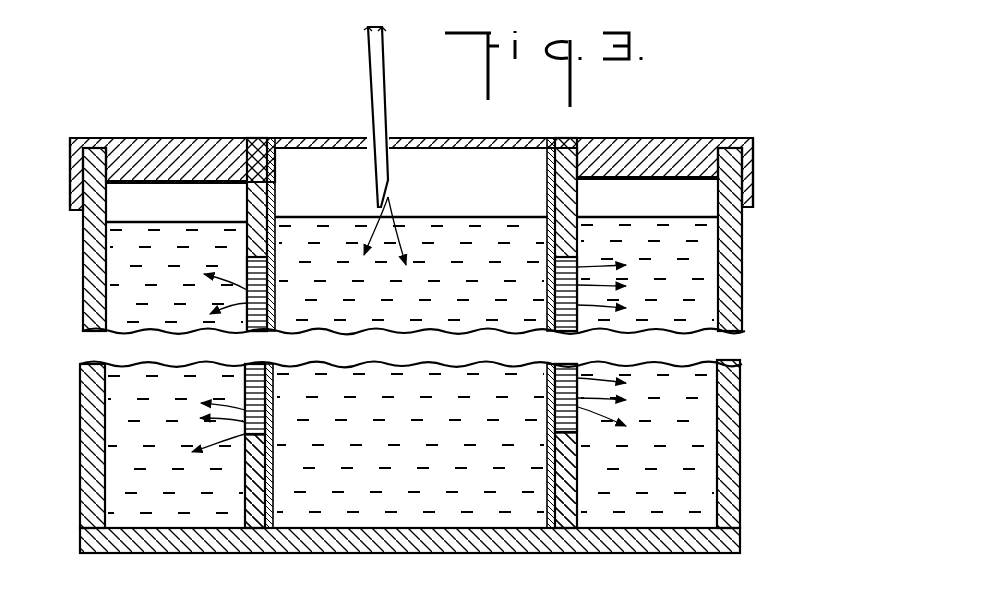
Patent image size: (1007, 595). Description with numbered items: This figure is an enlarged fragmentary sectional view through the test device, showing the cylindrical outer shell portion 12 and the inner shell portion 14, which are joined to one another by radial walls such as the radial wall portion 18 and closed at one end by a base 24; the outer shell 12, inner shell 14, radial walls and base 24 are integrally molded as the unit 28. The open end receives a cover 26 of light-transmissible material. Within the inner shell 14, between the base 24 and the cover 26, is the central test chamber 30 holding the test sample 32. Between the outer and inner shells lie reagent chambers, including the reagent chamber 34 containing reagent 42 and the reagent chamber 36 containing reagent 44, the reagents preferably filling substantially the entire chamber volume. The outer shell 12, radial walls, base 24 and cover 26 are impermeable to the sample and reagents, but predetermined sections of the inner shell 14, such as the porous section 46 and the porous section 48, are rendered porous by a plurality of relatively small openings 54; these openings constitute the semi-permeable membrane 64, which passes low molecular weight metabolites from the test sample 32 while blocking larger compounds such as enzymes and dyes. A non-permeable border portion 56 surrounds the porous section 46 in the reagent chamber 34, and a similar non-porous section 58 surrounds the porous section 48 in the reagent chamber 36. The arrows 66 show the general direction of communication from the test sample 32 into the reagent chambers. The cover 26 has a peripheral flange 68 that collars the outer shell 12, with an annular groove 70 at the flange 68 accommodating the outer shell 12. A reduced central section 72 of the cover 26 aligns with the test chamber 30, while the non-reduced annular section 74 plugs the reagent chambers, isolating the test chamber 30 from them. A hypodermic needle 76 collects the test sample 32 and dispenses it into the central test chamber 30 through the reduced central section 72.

The outer shell portion 12 is at (744, 303).
The inner shell portion 14 is at (152, 0).
The radial wall portion 18 is at (118, 0).
The base 24 is at (238, 0).
The cover 26 is at (757, 174).
The unit 28 is at (752, 277).
The central test chamber 30 is at (513, 160).
The test sample 32 is at (440, 293).
The reagent chamber 34 is at (704, 208).
The reagent chamber 36 is at (117, 202).
The reagent 42 is at (673, 271).
The reagent 44 is at (180, 304).
The porous section 46 is at (647, 443).
The porous section 48 is at (247, 258).
The openings 54 is at (247, 322).
The non-permeable border portion 56 is at (195, 0).
The non-porous section 58 is at (245, 193).
The semi-permeable membrane 64 is at (278, 175).
The arrows 66 is at (277, 303).
The peripheral flange 68 is at (756, 191).
The annular groove 70 is at (70, 163).
The reduced central section 72 is at (302, 137).
The non-reduced annular section 74 is at (166, 160).
The hypodermic needle 76 is at (385, 47).